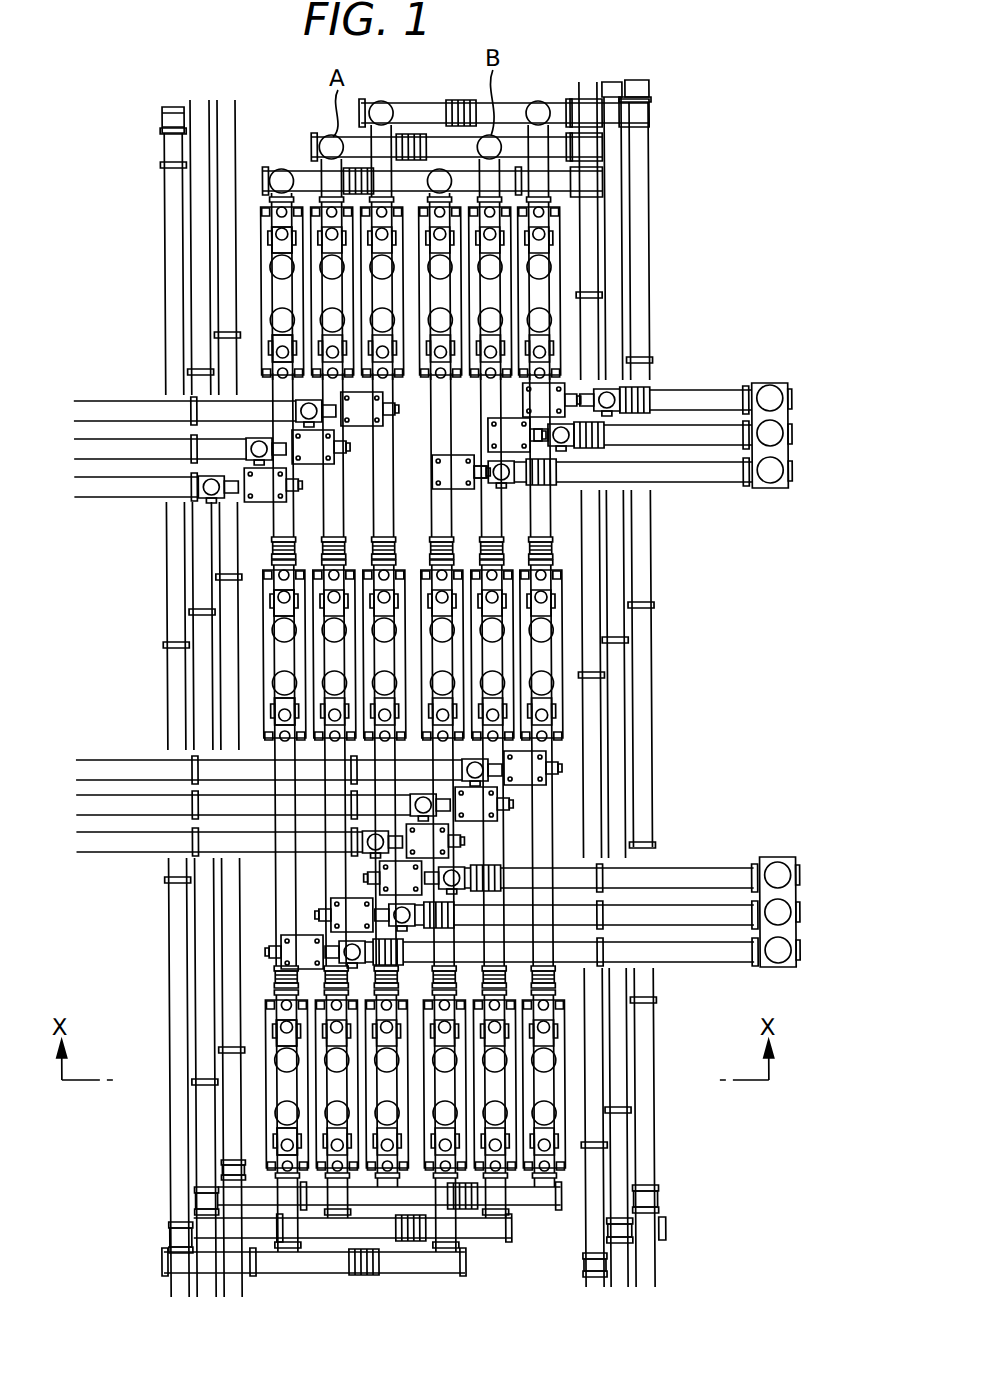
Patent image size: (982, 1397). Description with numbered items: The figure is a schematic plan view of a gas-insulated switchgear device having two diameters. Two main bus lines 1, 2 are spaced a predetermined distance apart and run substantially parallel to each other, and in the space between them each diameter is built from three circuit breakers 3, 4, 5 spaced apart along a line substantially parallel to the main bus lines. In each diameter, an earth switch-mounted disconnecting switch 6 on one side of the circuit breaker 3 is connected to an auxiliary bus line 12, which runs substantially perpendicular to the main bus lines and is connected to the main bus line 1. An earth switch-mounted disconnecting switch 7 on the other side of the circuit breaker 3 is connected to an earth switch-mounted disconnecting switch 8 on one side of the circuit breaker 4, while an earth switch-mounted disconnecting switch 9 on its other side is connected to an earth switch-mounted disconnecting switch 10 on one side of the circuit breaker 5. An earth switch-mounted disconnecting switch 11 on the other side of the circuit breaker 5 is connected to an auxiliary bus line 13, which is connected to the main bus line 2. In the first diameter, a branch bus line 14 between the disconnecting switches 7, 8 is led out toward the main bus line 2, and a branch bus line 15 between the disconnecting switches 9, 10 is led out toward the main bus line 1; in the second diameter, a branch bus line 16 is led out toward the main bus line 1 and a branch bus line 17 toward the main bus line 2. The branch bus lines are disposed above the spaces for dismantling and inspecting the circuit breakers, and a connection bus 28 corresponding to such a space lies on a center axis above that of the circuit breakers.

The main bus line 1 is at (166, 148).
The main bus line 2 is at (590, 82).
The circuit breaker 3 is at (263, 1085).
The circuit breaker 4 is at (263, 660).
The circuit breaker 5 is at (263, 275).
The earth switch-mounted disconnecting switch 6 is at (272, 1148).
The earth switch-mounted disconnecting switch 7 is at (272, 1020).
The earth switch-mounted disconnecting switch 8 is at (272, 706).
The earth switch-mounted disconnecting switch 9 is at (272, 598).
The earth switch-mounted disconnecting switch 10 is at (272, 350).
The earth switch-mounted disconnecting switch 11 is at (263, 213).
The auxiliary bus line 12 is at (412, 1273).
The auxiliary bus line 13 is at (300, 168).
The branch bus line 14 is at (700, 962).
The branch bus line 15 is at (118, 498).
The branch bus line 16 is at (115, 852).
The branch bus line 17 is at (707, 486).
The connection bus 28 is at (282, 906).